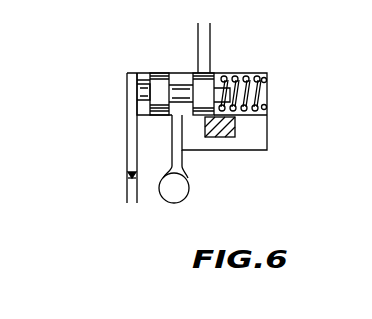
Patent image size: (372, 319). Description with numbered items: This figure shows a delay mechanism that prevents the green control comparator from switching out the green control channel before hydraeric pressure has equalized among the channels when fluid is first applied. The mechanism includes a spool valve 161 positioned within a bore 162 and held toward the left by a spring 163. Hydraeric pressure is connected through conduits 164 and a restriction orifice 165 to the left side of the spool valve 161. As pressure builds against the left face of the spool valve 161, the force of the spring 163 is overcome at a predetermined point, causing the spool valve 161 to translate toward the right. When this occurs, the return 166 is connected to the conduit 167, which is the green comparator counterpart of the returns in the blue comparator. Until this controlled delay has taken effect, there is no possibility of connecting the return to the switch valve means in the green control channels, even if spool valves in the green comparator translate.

The spool valve 161 is at (158, 72).
The bore 162 is at (132, 72).
The spring 163 is at (261, 72).
The conduits 164 is at (127, 190).
The restriction orifice 165 is at (129, 172).
The return 166 is at (190, 189).
The conduit 167 is at (211, 36).